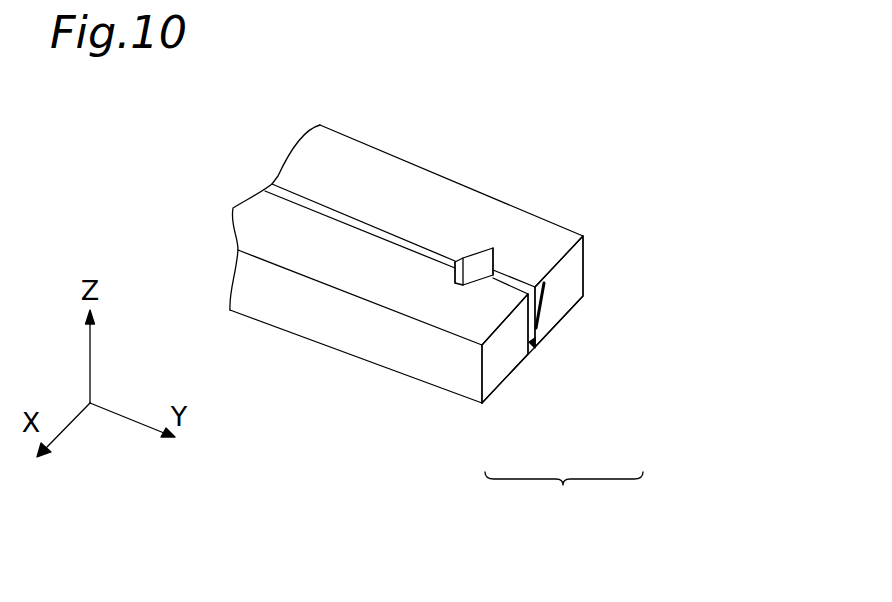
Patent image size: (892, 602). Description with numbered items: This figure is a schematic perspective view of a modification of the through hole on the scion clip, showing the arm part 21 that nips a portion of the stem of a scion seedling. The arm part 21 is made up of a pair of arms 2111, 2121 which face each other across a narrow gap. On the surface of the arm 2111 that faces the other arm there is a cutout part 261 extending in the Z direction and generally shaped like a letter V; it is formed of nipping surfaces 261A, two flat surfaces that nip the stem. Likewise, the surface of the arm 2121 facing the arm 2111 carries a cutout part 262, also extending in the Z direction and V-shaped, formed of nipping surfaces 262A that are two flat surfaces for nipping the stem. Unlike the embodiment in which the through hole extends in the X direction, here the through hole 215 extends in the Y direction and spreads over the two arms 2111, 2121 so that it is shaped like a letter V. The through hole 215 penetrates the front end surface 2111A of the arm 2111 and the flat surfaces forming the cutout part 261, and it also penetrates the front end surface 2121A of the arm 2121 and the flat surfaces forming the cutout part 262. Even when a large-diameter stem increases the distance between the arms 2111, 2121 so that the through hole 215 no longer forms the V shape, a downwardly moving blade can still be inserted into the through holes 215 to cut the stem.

The arm part 21 is at (436, 323).
The arm 2111 is at (563, 293).
The front end surface 2111A is at (573, 266).
The arm 2121 is at (519, 352).
The front end surface 2121A is at (490, 378).
The through hole 215 is at (547, 284).
The cutout part 261 is at (482, 248).
The nipping surface 261A is at (478, 263).
The cutout part 262 is at (463, 283).
The nipping surface 262A is at (455, 272).